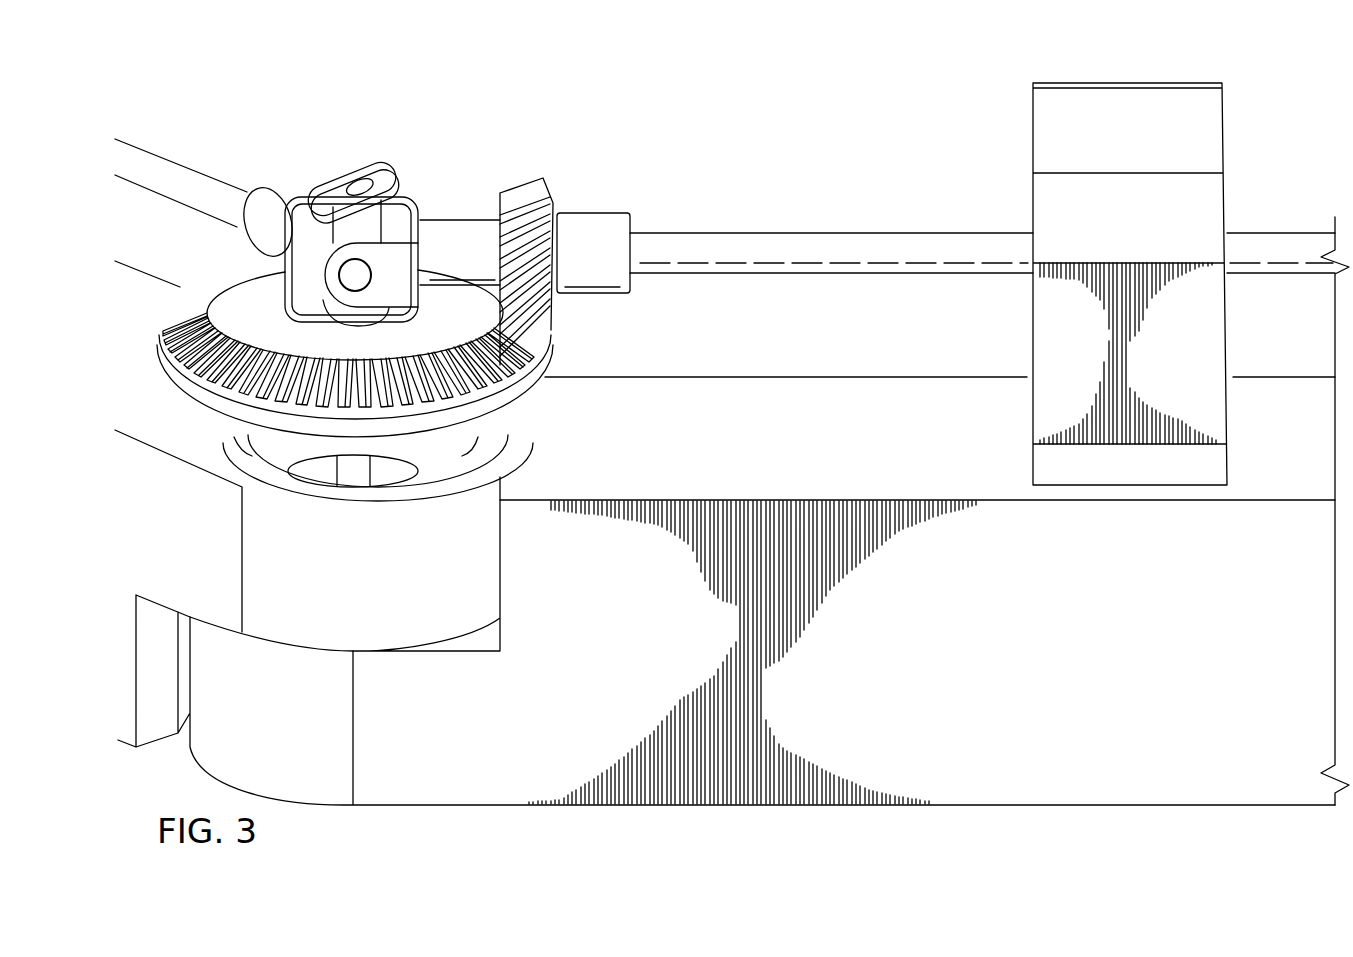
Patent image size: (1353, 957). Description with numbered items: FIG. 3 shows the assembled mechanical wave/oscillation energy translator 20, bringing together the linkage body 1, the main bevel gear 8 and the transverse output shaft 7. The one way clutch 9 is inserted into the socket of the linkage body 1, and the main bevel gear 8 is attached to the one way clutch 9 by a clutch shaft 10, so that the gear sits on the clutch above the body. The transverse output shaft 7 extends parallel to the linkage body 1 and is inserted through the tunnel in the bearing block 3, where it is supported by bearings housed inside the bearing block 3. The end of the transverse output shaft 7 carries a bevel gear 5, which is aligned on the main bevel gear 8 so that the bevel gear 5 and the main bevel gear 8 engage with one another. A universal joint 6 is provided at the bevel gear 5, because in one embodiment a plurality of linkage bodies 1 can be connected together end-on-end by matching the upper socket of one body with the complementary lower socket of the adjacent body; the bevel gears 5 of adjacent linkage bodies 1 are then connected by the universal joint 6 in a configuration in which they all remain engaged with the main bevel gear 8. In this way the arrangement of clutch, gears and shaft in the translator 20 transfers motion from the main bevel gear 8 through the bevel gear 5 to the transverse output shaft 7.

The linkage body 1 is at (1103, 794).
The bearing block 3 is at (1030, 127).
The bevel gear 5 is at (558, 222).
The universal joint 6 is at (370, 184).
The transverse output shaft 7 is at (825, 233).
The main bevel gear 8 is at (216, 268).
The one way clutch 9 is at (318, 478).
The clutch shaft 10 is at (388, 475).
The drive assembly 20 is at (744, 111).